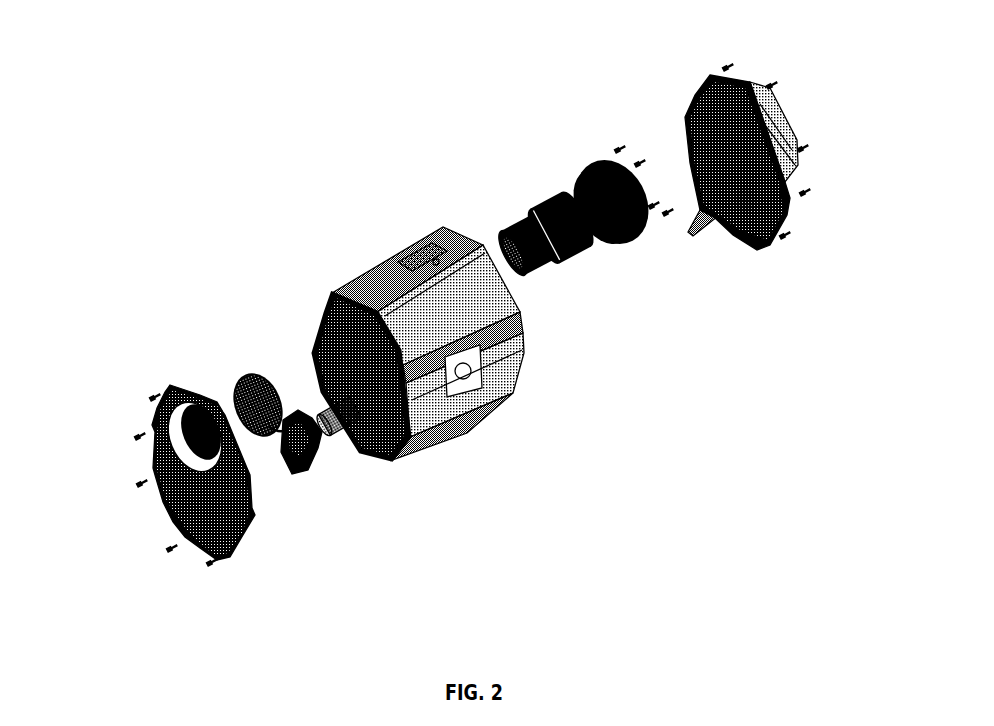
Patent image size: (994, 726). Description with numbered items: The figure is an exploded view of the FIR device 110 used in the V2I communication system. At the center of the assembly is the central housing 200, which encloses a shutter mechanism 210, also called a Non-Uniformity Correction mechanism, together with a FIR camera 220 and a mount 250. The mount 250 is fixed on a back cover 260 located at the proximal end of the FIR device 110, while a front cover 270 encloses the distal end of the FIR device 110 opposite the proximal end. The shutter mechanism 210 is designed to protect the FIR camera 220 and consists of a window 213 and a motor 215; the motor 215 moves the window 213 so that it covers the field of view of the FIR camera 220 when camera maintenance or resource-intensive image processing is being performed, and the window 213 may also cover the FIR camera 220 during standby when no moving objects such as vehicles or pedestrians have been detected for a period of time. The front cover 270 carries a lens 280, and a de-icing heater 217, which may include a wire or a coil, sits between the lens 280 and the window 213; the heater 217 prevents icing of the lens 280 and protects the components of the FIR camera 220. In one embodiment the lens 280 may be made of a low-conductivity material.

The FIR device 110 is at (592, 515).
The central housing 200 is at (358, 295).
The shutter mechanism 210 is at (290, 378).
The window 213 is at (247, 376).
The motor 215 is at (318, 453).
The heater 217 is at (232, 431).
The FIR camera 220 is at (533, 197).
The mount 250 is at (627, 243).
The back cover 260 is at (773, 63).
The front cover 270 is at (150, 425).
The lens 280 is at (232, 490).